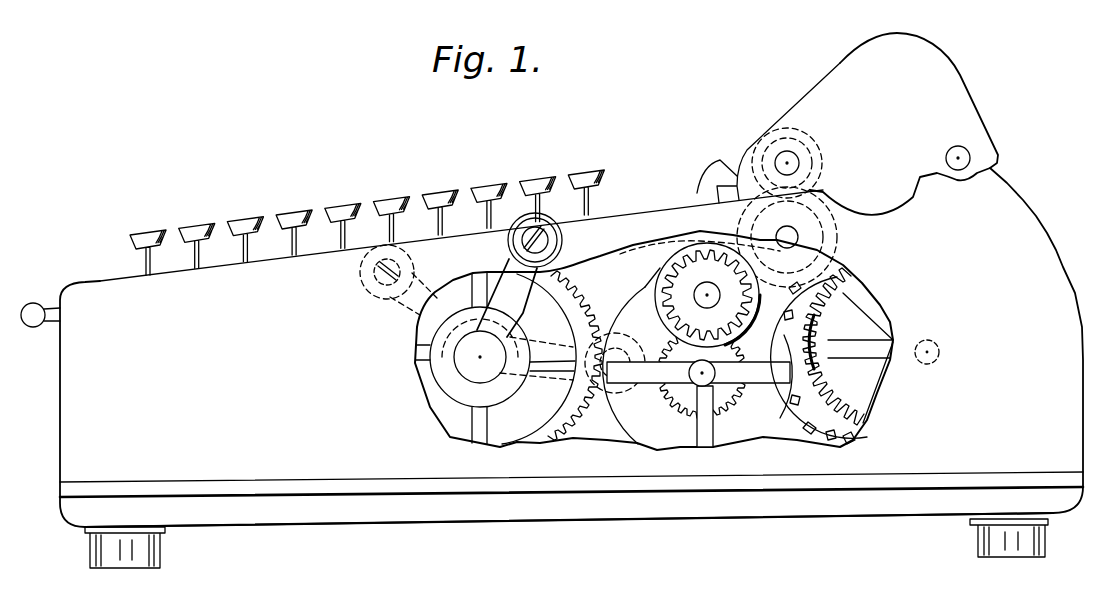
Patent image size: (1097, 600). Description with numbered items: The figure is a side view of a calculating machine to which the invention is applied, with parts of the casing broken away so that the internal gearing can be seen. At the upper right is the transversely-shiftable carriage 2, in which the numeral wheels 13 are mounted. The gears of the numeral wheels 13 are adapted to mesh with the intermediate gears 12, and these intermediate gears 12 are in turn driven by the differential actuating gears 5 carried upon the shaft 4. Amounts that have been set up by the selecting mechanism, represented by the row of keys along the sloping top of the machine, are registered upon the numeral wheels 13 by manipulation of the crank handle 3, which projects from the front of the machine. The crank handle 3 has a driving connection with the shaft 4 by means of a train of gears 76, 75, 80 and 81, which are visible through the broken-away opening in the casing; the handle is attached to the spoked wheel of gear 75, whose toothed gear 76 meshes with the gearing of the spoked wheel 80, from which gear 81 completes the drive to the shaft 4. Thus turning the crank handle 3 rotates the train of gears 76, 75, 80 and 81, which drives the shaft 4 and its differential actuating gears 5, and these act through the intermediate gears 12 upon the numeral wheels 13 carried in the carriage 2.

The transversely-shiftable carriage 2 is at (828, 90).
The crank handle 3 is at (522, 228).
The shaft 4 is at (707, 295).
The differential actuating gears 5 is at (658, 260).
The intermediate gears 12 is at (803, 258).
The numeral wheels 13 is at (778, 152).
The gear 75 is at (610, 427).
The gear 76 is at (570, 285).
The gear 80 is at (698, 313).
The gear 81 is at (728, 315).